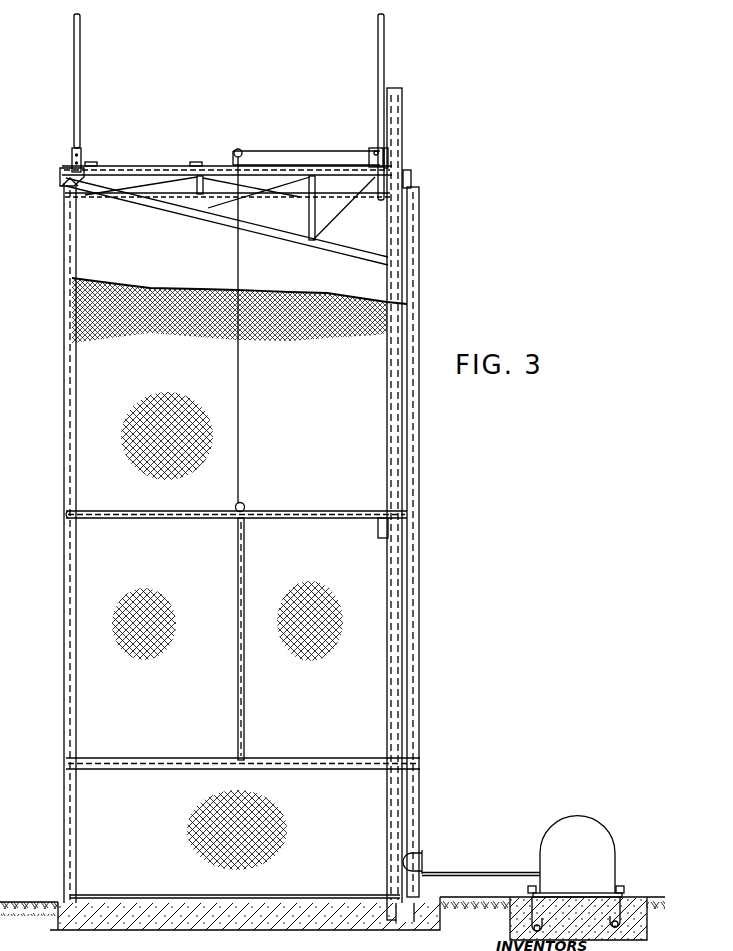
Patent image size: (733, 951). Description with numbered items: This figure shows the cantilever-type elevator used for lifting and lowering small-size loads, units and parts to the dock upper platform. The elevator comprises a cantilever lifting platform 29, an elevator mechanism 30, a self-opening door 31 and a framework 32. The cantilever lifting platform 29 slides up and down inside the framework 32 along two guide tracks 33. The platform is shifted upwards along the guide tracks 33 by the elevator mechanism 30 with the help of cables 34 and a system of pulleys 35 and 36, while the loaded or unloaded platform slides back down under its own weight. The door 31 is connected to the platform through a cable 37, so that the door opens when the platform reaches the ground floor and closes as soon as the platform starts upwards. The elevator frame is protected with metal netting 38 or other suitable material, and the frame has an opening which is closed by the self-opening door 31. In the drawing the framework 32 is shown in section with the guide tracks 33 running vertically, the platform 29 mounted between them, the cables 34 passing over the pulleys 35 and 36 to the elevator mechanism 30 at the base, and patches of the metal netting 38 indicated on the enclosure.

The cantilever lifting platform 29 is at (65, 182).
The elevator mechanism 30 is at (592, 838).
The self-opening door 31 is at (372, 675).
The framework 32 is at (73, 625).
The guide tracks 33 is at (394, 153).
The cables 34 is at (463, 873).
The pulley 35 is at (420, 856).
The pulley 36 is at (389, 112).
The cable 37 is at (342, 150).
The metal netting 38 is at (157, 442).